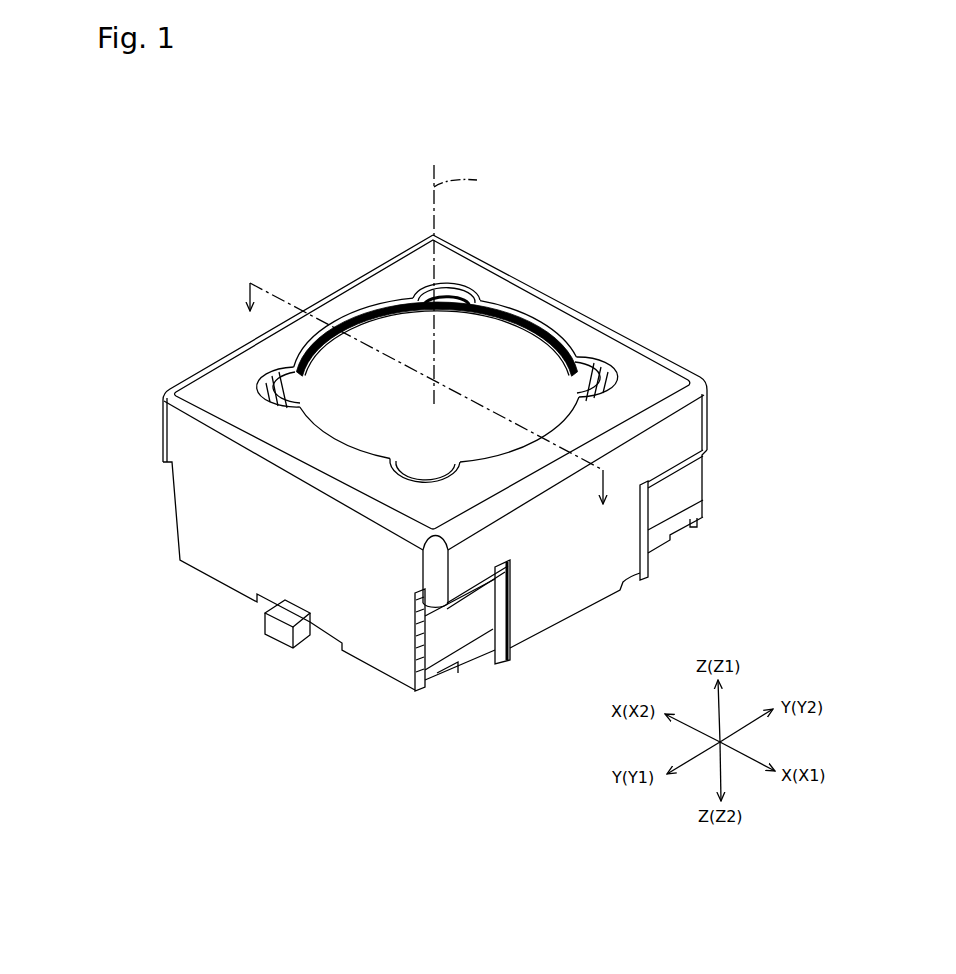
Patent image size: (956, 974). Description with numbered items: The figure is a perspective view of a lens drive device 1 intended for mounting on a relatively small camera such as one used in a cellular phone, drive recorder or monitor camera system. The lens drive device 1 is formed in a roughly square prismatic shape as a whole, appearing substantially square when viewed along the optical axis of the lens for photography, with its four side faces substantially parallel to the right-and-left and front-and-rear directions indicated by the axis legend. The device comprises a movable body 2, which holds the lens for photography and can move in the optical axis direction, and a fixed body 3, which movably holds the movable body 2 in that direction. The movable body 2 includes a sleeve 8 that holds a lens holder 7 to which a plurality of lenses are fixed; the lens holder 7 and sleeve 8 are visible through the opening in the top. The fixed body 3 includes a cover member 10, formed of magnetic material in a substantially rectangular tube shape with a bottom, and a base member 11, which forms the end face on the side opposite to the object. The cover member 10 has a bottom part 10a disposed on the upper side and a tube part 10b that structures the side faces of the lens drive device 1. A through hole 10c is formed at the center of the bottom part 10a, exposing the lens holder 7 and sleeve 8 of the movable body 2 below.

The lens drive device 1 is at (686, 131).
The movable body 2 is at (580, 360).
The fixed body 3 is at (762, 417).
The lens holder 7 is at (510, 335).
The sleeve 8 is at (596, 379).
The cover member 10 is at (704, 413).
The bottom part 10a is at (660, 388).
The tube part 10b is at (292, 540).
The through hole 10c is at (385, 300).
The base member 11 is at (704, 478).